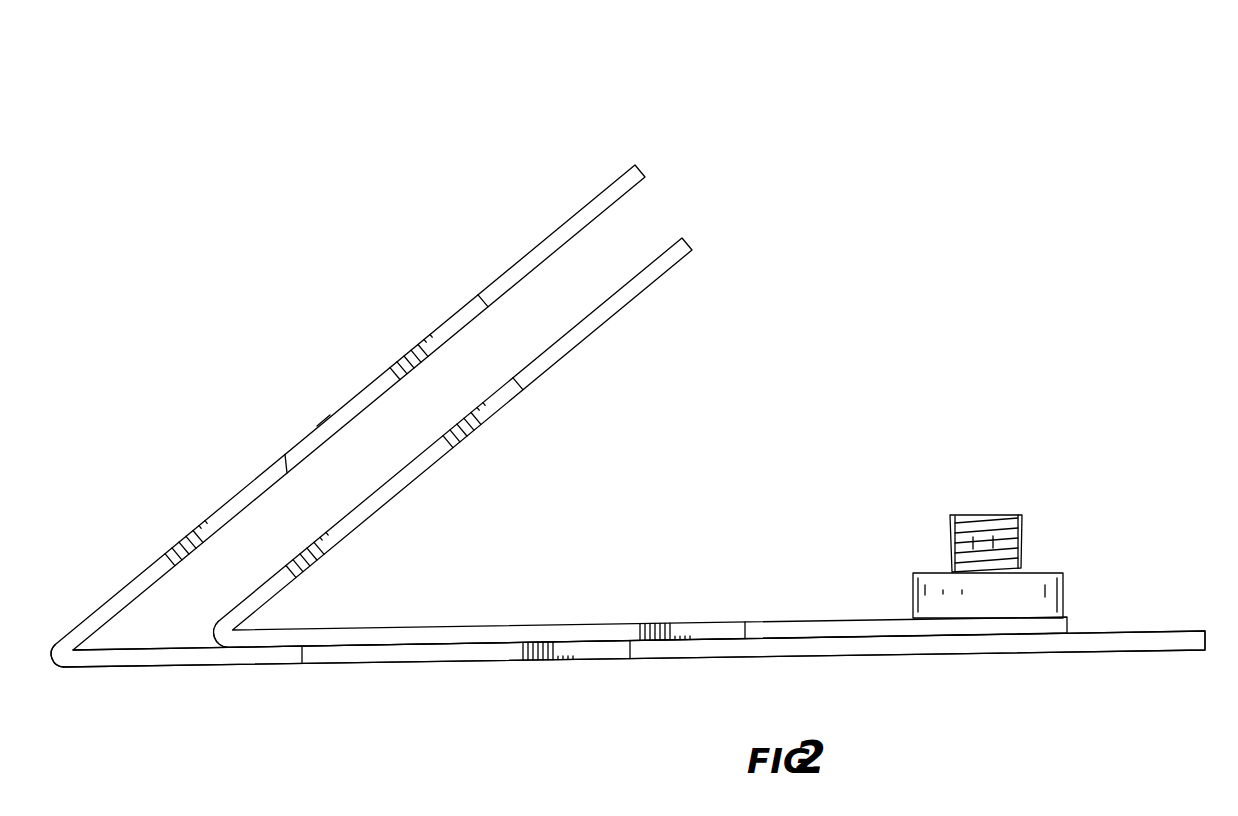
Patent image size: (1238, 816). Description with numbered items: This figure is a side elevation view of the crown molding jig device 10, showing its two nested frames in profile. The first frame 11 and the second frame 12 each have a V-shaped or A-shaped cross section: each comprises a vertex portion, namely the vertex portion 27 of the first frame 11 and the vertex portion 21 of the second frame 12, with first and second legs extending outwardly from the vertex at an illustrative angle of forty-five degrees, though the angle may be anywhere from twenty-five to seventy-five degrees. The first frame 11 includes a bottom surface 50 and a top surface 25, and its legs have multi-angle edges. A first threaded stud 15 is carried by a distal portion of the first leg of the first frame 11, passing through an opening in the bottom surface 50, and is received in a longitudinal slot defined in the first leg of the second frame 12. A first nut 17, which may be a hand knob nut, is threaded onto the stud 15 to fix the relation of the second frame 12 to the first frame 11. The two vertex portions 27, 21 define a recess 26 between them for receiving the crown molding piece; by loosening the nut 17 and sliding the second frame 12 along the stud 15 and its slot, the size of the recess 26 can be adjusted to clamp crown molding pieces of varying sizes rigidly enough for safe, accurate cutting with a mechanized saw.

The crown molding jig device 10 is at (663, 70).
The first frame 11 is at (508, 267).
The second frame 12 is at (652, 270).
The first threaded stud 15 is at (990, 528).
The first nut 17 is at (1047, 592).
The vertex portion of the second frame 21 is at (222, 632).
The top surface 25 is at (317, 426).
The recess 26 is at (225, 570).
The vertex portion of the first frame 27 is at (60, 657).
The bottom surface 50 is at (488, 661).